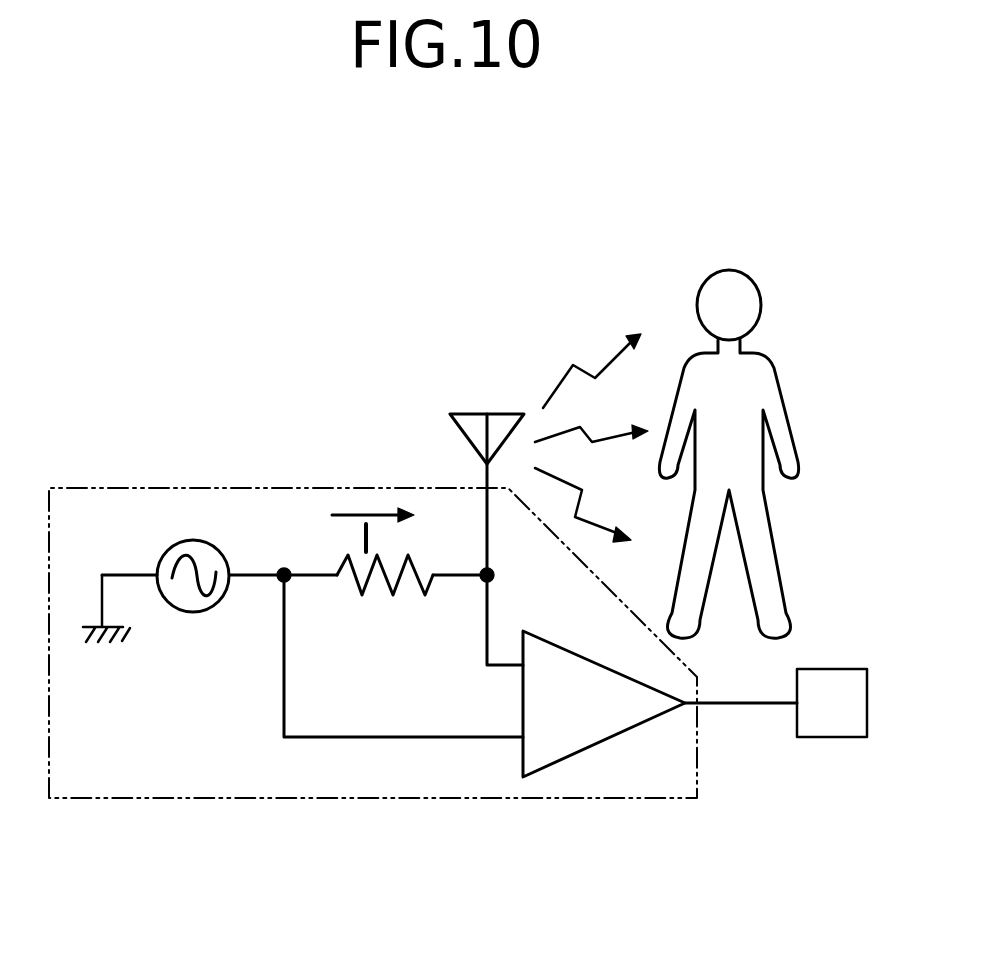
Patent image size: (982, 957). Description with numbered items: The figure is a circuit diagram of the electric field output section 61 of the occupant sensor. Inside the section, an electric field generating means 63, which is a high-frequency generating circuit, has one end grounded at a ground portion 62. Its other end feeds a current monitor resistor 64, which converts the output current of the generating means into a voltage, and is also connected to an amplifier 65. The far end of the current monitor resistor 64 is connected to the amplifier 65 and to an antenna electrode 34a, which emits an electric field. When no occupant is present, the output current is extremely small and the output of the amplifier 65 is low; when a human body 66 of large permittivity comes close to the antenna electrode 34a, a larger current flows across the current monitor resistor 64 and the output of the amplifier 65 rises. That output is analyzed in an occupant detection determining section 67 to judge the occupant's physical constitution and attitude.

The antenna electrode 34a is at (463, 413).
The electric field output section 61 is at (237, 484).
The ground portion 62 is at (103, 634).
The electric field generating means 63 is at (213, 612).
The current monitor resistor 64 is at (398, 588).
The amplifier 65 is at (568, 640).
The human body 66 is at (787, 400).
The occupant detection determining section 67 is at (852, 724).